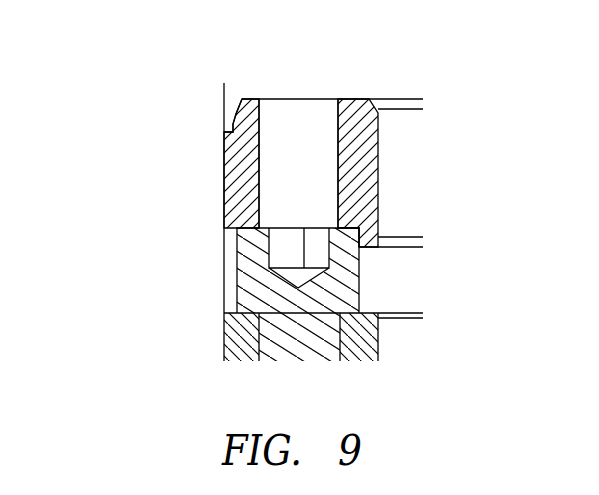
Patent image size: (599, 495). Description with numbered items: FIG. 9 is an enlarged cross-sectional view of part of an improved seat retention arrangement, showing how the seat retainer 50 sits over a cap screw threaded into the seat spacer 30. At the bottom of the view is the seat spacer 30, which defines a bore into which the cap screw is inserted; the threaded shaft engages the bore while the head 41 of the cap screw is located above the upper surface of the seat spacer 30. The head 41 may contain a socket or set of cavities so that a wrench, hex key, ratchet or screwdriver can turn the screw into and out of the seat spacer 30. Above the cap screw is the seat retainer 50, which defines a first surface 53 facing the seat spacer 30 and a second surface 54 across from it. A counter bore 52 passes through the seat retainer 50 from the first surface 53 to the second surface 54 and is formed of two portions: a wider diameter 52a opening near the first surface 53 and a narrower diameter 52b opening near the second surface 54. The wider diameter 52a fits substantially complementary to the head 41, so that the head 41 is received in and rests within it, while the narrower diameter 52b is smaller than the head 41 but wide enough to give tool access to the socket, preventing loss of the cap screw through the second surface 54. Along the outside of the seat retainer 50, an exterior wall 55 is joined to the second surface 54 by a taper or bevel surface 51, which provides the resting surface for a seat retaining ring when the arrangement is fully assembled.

The seat retainer 50 is at (285, 193).
The seat retainer taper surface 51 is at (231, 122).
The counter bore 52 is at (330, 186).
The wider diameter opening 52a is at (342, 230).
The narrower diameter opening 52b is at (338, 127).
The first surface of seat retainer 53 is at (403, 249).
The second surface of seat retainer 54 is at (353, 98).
The exterior wall of seat retainer 55 is at (223, 167).
The cap screw head 41 is at (238, 266).
The seat spacer 30 is at (230, 313).